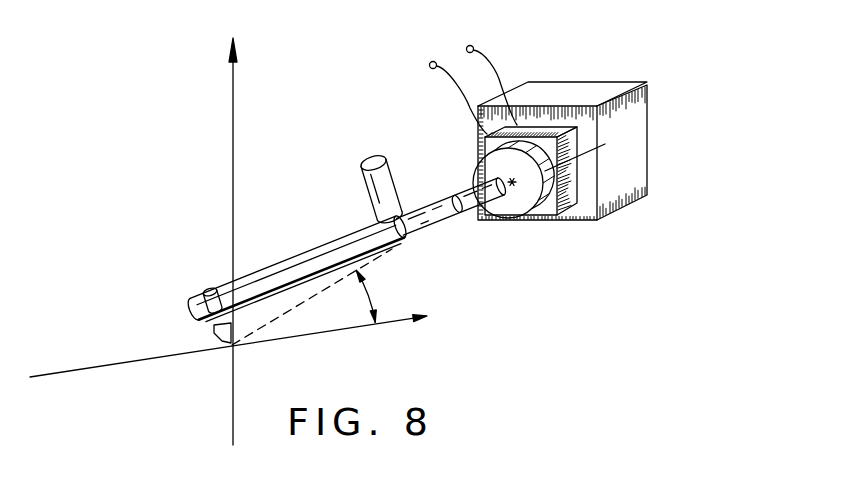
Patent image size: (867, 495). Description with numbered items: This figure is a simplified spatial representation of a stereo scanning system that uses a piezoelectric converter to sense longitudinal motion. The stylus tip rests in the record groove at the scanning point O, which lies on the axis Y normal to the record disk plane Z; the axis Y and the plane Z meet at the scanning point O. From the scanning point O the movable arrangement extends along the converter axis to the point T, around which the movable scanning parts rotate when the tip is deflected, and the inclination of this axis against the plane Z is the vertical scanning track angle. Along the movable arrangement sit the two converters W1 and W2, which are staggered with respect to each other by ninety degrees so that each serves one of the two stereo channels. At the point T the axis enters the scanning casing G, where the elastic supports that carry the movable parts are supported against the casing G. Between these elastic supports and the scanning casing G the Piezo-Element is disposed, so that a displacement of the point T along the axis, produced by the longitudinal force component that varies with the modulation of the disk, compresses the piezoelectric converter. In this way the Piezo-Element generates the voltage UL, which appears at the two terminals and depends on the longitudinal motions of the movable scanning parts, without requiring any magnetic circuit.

The converter W1 is at (373, 187).
The converter W2 is at (423, 217).
The scanning casing G is at (633, 135).
The rotation point T is at (509, 181).
The voltage UL is at (472, 79).
The piezoelectric converter Piezo-Element is at (543, 128).
The axis Y is at (233, 229).
The record disk plane Z is at (231, 346).
The scanning point O is at (213, 363).